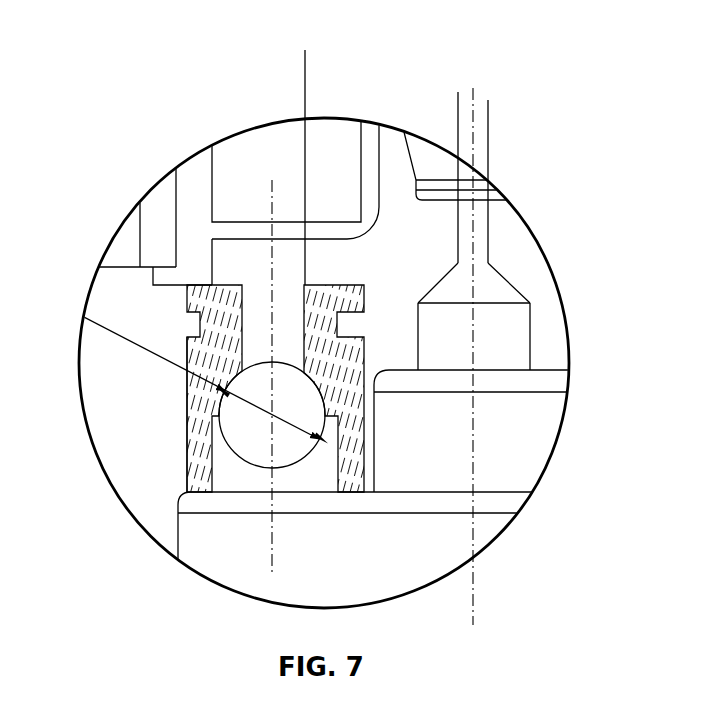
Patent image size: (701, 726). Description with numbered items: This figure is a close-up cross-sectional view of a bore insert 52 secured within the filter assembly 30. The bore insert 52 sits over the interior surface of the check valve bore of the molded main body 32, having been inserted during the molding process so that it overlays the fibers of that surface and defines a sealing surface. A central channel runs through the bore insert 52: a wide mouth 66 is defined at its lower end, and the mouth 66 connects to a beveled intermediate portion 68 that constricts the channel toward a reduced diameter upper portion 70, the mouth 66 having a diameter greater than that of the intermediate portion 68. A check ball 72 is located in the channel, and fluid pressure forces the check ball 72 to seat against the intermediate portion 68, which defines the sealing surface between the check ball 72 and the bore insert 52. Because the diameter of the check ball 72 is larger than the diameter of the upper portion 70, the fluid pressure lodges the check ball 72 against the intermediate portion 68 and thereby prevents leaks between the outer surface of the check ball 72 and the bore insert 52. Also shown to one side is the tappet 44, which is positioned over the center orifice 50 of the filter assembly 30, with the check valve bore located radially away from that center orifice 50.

The filter assembly 30 is at (543, 243).
The main body 32 is at (103, 360).
The tappet 44 is at (480, 157).
The center orifice 50 is at (520, 327).
The bore insert 52 is at (185, 398).
The wide mouth 66 is at (212, 475).
The beveled intermediate portion 68 is at (187, 298).
The upper portion 70 is at (252, 257).
The check ball 72 is at (260, 462).